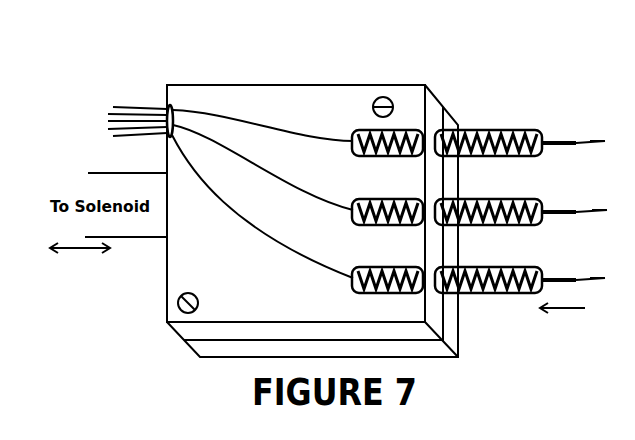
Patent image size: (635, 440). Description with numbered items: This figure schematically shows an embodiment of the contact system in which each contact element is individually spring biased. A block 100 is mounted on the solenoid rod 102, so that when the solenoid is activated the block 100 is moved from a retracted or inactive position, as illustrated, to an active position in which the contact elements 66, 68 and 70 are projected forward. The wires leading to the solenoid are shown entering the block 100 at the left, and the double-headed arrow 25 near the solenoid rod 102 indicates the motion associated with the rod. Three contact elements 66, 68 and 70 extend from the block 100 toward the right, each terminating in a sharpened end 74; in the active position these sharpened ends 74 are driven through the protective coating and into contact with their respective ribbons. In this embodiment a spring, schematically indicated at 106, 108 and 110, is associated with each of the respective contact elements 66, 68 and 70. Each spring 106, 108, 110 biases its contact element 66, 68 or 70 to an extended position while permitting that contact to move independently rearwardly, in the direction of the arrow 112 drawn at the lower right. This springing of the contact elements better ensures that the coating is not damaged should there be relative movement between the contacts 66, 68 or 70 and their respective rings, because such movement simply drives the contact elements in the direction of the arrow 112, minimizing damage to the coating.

The block 100 is at (300, 83).
The solenoid rod 102 is at (110, 172).
The direction of travel arrow 25 is at (82, 248).
The spring 106 is at (455, 130).
The spring 108 is at (452, 195).
The spring 110 is at (457, 263).
The contact element 66 is at (558, 137).
The contact element 68 is at (553, 205).
The contact element 70 is at (555, 268).
The sharpened end 74 is at (605, 141).
The arrow 112 is at (570, 308).